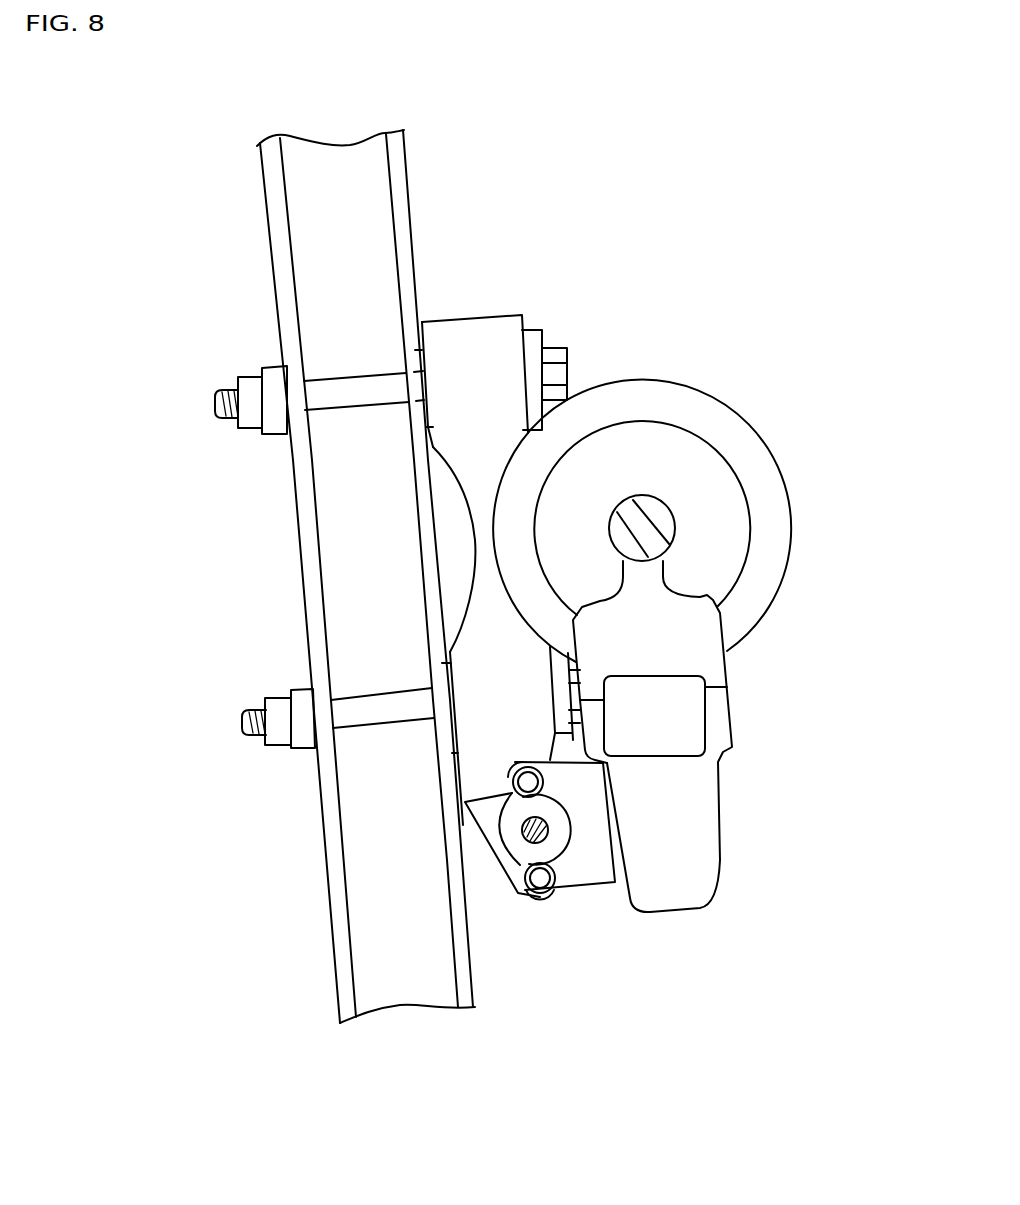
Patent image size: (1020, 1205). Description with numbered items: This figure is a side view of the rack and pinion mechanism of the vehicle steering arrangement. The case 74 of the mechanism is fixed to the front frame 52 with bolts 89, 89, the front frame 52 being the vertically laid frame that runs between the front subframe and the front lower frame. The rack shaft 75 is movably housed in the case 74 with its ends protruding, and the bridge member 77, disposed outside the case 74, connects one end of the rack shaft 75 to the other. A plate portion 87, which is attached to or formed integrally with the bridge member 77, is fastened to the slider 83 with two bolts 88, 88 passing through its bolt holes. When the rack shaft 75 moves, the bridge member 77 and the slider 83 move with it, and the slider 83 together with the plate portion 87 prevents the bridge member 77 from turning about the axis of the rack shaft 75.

The front frame 52 is at (340, 291).
The case 74 is at (476, 353).
The rack shaft 75 is at (648, 518).
The bridge member 77 is at (695, 840).
The slider 83 is at (510, 837).
The plate portion 87 is at (588, 872).
The bolts 88 is at (528, 782).
The bolts 89 is at (214, 404).